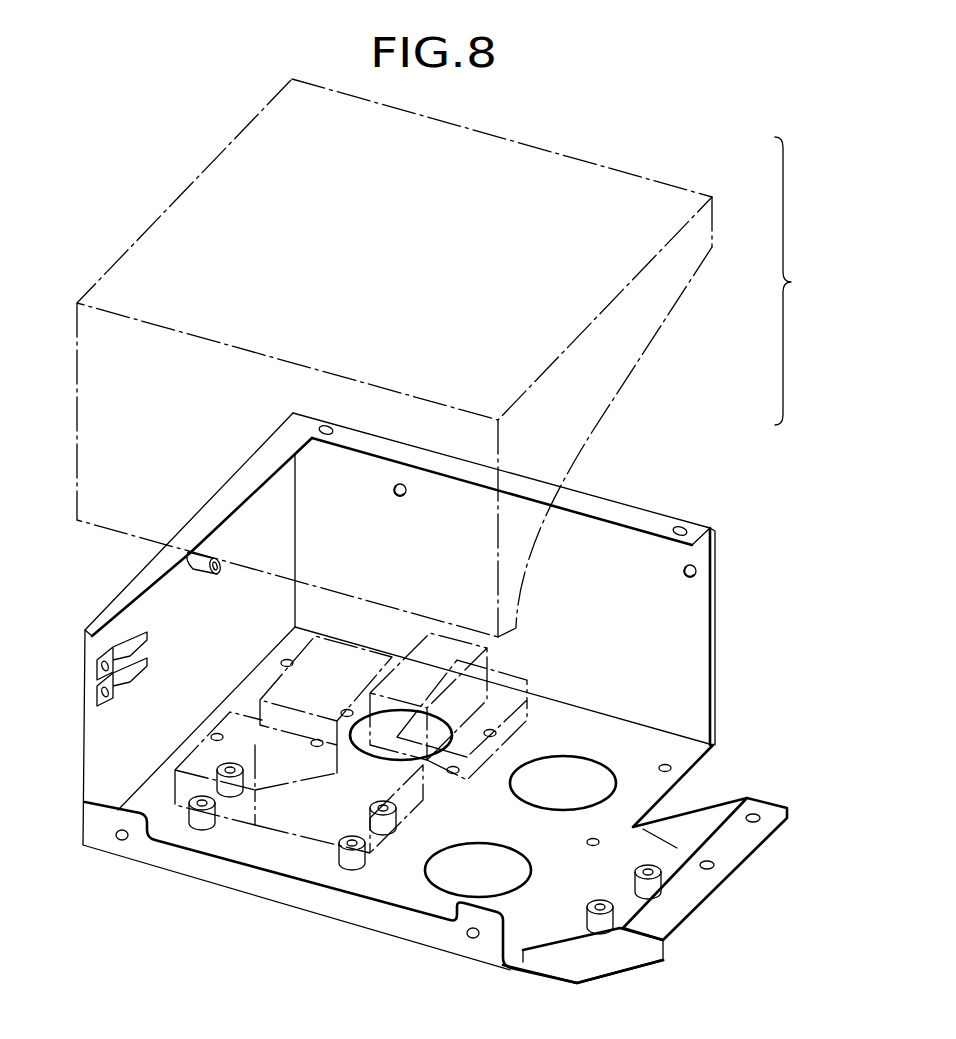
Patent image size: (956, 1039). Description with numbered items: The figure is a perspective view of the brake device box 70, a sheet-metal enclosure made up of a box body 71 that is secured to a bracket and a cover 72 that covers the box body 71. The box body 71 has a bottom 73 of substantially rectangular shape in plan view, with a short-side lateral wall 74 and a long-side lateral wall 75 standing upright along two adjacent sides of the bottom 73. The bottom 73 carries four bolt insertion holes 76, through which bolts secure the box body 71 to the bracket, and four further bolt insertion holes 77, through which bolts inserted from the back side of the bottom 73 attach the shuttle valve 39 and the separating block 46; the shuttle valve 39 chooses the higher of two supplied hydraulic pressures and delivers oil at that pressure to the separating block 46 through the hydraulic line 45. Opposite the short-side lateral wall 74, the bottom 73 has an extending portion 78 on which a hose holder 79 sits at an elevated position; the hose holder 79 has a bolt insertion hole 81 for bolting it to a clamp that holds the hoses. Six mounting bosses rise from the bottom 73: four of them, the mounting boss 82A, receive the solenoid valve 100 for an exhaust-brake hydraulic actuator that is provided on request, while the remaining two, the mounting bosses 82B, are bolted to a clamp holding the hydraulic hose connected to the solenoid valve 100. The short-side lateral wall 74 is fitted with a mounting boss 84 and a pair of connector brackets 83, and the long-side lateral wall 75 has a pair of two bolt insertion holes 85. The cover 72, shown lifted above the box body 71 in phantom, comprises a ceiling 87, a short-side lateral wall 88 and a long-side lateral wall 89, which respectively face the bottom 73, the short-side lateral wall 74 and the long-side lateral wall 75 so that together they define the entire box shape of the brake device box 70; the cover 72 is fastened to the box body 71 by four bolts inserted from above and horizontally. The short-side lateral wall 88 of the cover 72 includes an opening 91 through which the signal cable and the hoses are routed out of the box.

The brake device box 70 is at (798, 281).
The box body 71 is at (706, 488).
The cover 72 is at (403, 358).
The bottom 73 is at (432, 903).
The short-side lateral wall 74 is at (97, 735).
The long-side lateral wall 75 is at (713, 647).
The bolt insertion holes 76 is at (282, 662).
The bolt insertion holes 77 is at (344, 711).
The extending portion 78 is at (541, 984).
The hose holder 79 is at (697, 889).
The bolt insertion hole 81 is at (758, 814).
The mounting boss 82A is at (216, 770).
The mounting bosses 82B is at (636, 880).
The connector brackets 83 is at (145, 636).
The mounting boss 84 is at (205, 573).
The bolt insertion holes 85 is at (400, 498).
The ceiling 87 is at (551, 163).
The short-side lateral wall 88 is at (664, 306).
The long-side lateral wall 89 is at (105, 410).
The opening 91 is at (583, 451).
The shuttle valve 39 is at (300, 657).
The hydraulic line 45 is at (415, 672).
The separating block 46 is at (500, 672).
The solenoid valve 100 is at (266, 810).